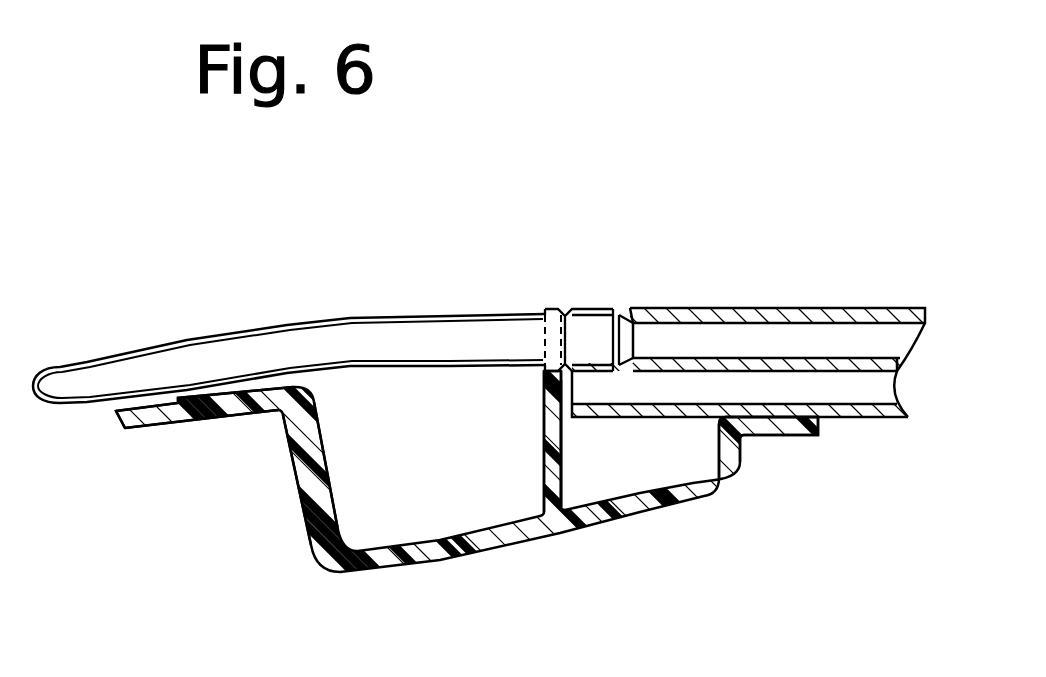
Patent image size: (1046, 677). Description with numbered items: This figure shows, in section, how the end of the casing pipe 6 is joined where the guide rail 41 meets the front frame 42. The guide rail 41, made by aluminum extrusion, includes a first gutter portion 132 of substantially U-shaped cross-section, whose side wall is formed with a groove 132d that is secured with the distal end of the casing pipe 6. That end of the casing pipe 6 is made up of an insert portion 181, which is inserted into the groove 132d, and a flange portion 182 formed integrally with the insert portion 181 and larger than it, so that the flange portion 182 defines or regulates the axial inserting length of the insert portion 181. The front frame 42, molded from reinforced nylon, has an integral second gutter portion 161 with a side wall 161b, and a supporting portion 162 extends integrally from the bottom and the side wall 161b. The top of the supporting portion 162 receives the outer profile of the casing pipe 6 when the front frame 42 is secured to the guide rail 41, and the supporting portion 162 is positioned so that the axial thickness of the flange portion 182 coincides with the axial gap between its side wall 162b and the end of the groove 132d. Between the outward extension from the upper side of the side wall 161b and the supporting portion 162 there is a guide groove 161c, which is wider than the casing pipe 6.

The casing pipe 6 is at (388, 317).
The guide rail 41 is at (821, 309).
The front frame 42 is at (298, 493).
The first gutter portion 132 is at (679, 402).
The groove 132d is at (683, 330).
The second gutter portion 161 is at (505, 470).
The side wall 161b is at (318, 460).
The guide groove 161c is at (222, 396).
The supporting portion 162 is at (550, 472).
The side wall 162b is at (562, 437).
The insert portion 181 is at (600, 310).
The flange portion 182 is at (566, 313).